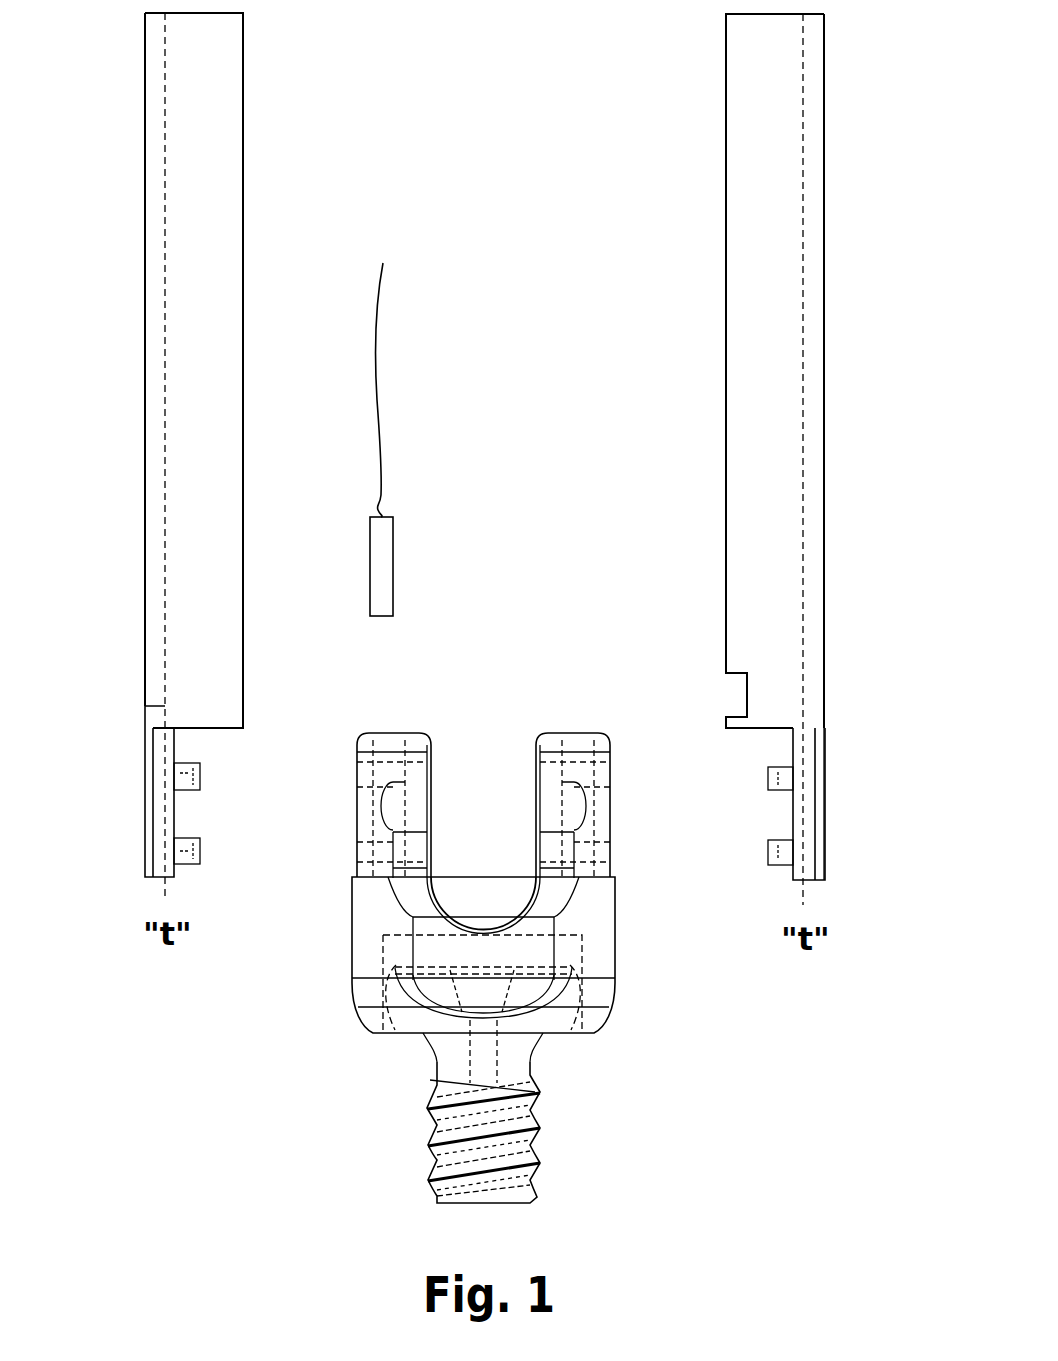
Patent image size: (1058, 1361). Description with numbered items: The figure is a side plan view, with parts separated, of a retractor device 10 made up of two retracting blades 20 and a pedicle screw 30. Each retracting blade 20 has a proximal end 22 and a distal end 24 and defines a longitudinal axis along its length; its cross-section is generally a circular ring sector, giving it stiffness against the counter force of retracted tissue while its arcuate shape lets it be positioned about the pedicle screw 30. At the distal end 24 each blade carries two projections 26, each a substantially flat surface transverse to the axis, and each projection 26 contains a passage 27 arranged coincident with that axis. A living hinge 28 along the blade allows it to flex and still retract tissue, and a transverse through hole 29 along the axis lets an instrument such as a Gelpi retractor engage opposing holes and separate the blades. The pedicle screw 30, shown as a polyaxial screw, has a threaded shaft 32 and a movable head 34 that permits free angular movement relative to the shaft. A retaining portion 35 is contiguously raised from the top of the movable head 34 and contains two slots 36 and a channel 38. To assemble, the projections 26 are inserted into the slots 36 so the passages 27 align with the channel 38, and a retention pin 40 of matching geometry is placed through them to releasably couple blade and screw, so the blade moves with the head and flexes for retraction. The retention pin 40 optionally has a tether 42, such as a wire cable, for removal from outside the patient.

The retractor device 10 is at (487, 71).
The retracting blade 20 is at (214, 164).
The proximal end 22 is at (197, 64).
The distal end 24 is at (150, 818).
The projection 26 is at (201, 770).
The passage 27 is at (181, 779).
The living hinge 28 is at (735, 695).
The transverse through hole 29 is at (812, 85).
The pedicle screw 30 is at (427, 1046).
The threaded shaft 32 is at (432, 1128).
The movable head 34 is at (597, 993).
The retaining portion 35 is at (547, 733).
The slot 36 is at (374, 778).
The channel 38 is at (393, 735).
The retention pin 40 is at (393, 560).
The tether 42 is at (383, 402).